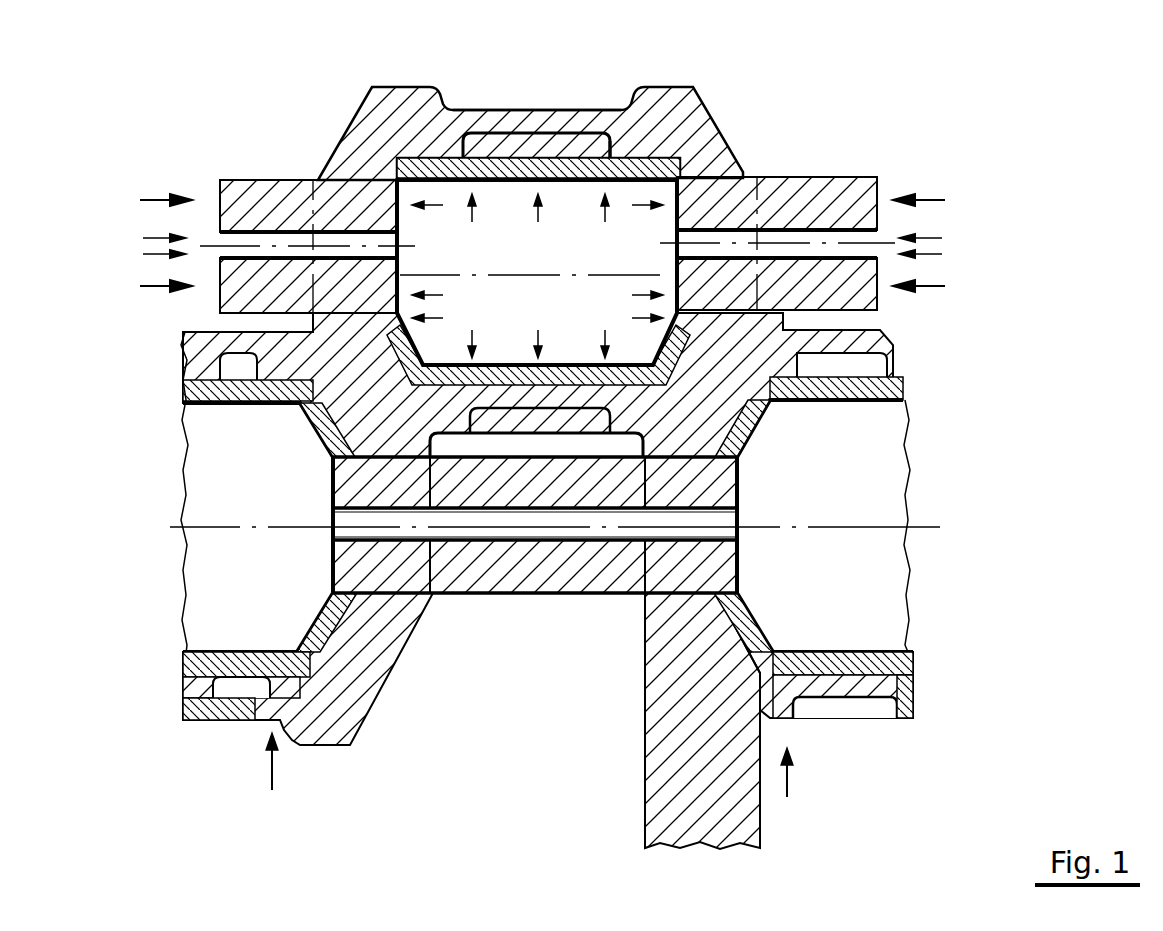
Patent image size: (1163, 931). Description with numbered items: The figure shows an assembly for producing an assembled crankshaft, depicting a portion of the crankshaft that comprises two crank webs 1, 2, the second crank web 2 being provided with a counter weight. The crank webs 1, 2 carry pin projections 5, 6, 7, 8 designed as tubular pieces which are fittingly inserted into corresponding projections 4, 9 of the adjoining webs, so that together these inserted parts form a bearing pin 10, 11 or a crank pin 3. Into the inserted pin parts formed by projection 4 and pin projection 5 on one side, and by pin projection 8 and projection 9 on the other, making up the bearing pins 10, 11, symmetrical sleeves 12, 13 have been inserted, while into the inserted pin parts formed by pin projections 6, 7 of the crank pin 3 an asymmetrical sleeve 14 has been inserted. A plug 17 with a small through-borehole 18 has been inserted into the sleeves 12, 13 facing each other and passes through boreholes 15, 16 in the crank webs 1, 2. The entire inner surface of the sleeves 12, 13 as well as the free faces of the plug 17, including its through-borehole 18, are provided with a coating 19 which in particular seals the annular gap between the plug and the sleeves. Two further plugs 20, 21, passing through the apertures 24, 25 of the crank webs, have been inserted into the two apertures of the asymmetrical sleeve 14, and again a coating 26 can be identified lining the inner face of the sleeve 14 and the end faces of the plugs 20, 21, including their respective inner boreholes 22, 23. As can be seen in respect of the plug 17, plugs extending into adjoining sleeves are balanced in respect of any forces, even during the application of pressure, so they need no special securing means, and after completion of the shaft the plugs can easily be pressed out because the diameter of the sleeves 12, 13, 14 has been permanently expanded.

The crank web 1 is at (363, 708).
The crank web 2 is at (660, 730).
The crank pin 3 is at (585, 80).
The projection 4 is at (226, 690).
The pin projection 5 is at (248, 712).
The pin projection 6 is at (515, 140).
The pin projection 7 is at (555, 122).
The pin projection 8 is at (823, 692).
The projection 9 is at (856, 712).
The bearing pin 10 is at (268, 776).
The bearing pin 11 is at (787, 787).
The symmetrical sleeve 12 is at (205, 672).
The symmetrical sleeve 13 is at (893, 705).
The asymmetrical sleeve 14 is at (452, 168).
The borehole 15 is at (418, 600).
The borehole 16 is at (645, 628).
The plug 17 is at (557, 590).
The through-borehole 18 is at (485, 538).
The coating 19 is at (520, 565).
The plug 20 is at (245, 200).
The plug 21 is at (800, 200).
The inner borehole 22 is at (277, 240).
The inner borehole 23 is at (838, 240).
The aperture 24 is at (318, 182).
The aperture 25 is at (750, 190).
The coating 26 is at (610, 150).